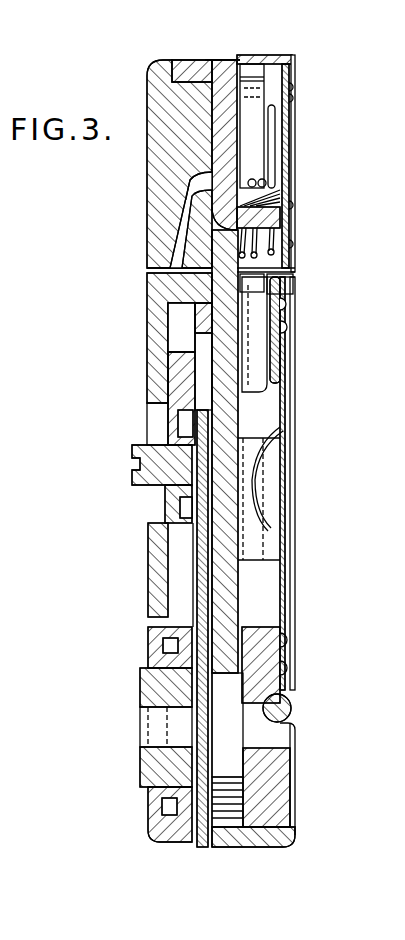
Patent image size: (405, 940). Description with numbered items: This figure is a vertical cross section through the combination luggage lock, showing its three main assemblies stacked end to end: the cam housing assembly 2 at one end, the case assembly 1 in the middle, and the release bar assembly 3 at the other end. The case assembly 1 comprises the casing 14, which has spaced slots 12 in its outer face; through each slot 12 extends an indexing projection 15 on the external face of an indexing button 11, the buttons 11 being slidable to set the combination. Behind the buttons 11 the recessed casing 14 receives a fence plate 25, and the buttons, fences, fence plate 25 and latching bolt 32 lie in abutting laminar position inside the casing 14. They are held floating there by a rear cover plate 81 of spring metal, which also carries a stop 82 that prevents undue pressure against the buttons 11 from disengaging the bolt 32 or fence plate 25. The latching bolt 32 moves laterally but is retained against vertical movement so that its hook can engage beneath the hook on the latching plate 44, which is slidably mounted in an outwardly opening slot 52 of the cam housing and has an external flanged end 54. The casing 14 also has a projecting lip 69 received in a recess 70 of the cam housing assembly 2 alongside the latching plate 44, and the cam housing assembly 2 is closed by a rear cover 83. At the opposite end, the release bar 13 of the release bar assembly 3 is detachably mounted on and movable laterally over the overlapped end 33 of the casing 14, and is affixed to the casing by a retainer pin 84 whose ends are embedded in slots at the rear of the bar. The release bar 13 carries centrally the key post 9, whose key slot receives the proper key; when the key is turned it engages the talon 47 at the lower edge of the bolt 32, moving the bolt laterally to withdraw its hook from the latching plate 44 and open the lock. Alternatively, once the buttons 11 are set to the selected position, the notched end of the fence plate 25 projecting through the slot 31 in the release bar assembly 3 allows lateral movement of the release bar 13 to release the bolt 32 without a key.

The case assembly 1 is at (143, 334).
The cam housing assembly 2 is at (142, 178).
The release bar assembly 3 is at (136, 716).
The key post 9 is at (138, 689).
The indexing button 11 is at (162, 423).
The slot 12 is at (160, 507).
The release bar 13 is at (148, 640).
The casing 14 is at (148, 367).
The indexing projection 15 is at (132, 483).
The fence plate 25 is at (194, 847).
The slot 31 is at (214, 848).
The latching bolt 32 is at (247, 422).
The end of the casing 33 is at (282, 778).
The latching plate 44 is at (222, 60).
The talon 47 is at (270, 657).
The slot 52 is at (240, 62).
The flanged end 54 is at (200, 62).
The lip 69 is at (180, 241).
The recess 70 is at (197, 181).
The rear cover plate 81 is at (301, 459).
The stop 82 is at (263, 522).
The rear cover 83 is at (295, 192).
The retainer pin 84 is at (292, 708).